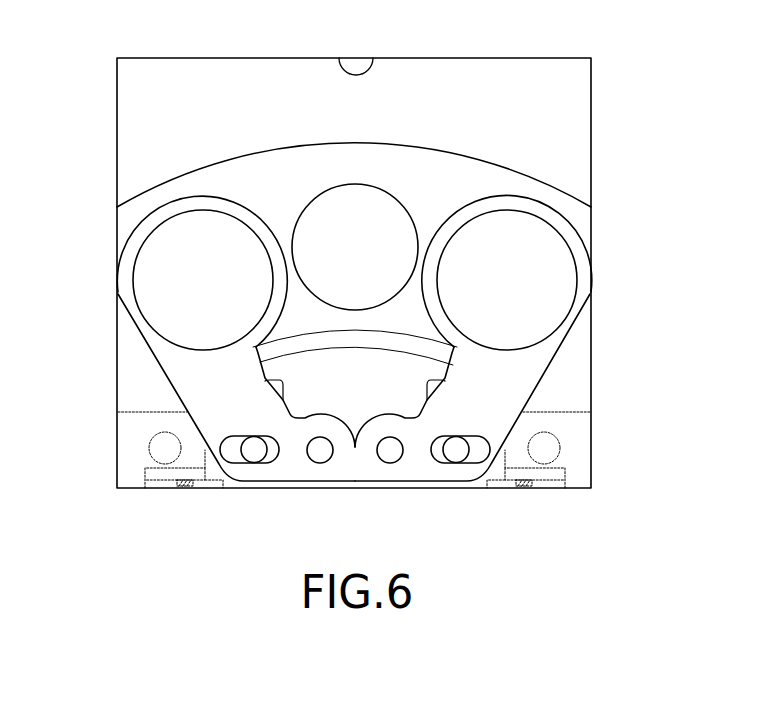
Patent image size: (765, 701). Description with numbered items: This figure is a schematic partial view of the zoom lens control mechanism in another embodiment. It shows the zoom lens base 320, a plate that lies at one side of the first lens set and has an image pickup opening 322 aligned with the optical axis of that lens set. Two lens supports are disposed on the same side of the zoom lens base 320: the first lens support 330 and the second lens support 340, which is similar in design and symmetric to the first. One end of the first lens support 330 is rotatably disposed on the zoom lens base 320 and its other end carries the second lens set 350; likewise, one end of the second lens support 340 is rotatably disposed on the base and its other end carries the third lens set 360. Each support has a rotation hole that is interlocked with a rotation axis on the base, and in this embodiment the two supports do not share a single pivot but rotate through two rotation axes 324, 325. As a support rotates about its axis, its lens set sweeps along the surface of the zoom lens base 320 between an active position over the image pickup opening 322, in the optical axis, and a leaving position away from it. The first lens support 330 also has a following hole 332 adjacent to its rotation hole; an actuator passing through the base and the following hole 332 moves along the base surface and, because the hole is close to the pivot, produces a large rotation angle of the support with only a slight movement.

The zoom lens base 320 is at (572, 127).
The image pickup opening 322 is at (367, 215).
The rotation axis 324 is at (389, 452).
The rotation axis 325 is at (321, 452).
The first lens support 330 is at (473, 387).
The following hole 332 is at (478, 455).
The second lens support 340 is at (235, 385).
The second lens set 350 is at (533, 300).
The third lens set 360 is at (177, 302).